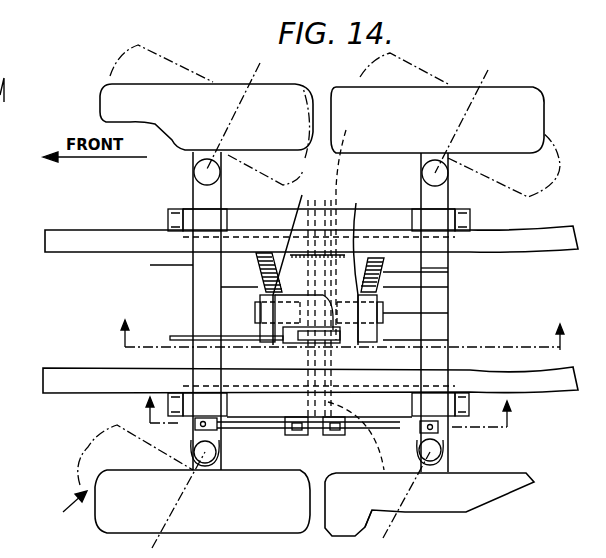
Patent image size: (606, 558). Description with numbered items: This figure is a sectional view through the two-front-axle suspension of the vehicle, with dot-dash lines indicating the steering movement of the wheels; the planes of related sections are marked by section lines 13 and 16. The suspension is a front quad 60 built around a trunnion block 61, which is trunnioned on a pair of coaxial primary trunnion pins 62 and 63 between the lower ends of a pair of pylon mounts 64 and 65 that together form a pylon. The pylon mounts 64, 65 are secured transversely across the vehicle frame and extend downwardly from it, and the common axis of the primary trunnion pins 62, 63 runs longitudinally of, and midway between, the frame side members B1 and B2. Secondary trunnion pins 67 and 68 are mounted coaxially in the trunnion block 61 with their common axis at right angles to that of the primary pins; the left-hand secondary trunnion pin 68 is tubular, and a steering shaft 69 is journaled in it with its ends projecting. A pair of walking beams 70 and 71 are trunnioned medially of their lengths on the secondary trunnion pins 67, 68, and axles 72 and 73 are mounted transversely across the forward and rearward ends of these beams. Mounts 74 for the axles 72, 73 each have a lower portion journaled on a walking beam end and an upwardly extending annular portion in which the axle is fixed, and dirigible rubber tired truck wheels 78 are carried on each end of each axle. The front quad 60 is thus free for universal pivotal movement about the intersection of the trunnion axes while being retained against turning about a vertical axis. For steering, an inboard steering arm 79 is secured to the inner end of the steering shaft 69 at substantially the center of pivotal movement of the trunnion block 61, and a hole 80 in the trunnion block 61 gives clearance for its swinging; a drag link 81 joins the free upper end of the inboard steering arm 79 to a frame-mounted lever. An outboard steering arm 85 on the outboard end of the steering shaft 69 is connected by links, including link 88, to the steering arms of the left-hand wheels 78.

The section line 13- 13 is at (330, 428).
The section line 16- 16 is at (345, 323).
The front quad 60 is at (65, 514).
The trunnion block 61 is at (438, 268).
The primary trunnion pin 62 is at (255, 308).
The primary trunnion pin 63 is at (380, 312).
The pylon mount 64 is at (290, 260).
The pylon mount 65 is at (367, 263).
The secondary trunnion pin 67 is at (356, 293).
The secondary trunnion pin 68 is at (392, 476).
The steering shaft 69 is at (308, 437).
The walking beam 70 is at (393, 210).
The walking beam 71 is at (247, 412).
The axle 72 is at (152, 265).
The axle 73 is at (440, 295).
The mount 74 is at (203, 214).
The truck wheel 78 is at (335, 100).
The inboard steering arm 79 is at (345, 338).
The hole 80 is at (258, 299).
The drag link 81 is at (205, 336).
The outboard steering arm 85 is at (318, 437).
The link 88 is at (402, 471).
The frame side member B1 is at (53, 371).
The frame side member B2 is at (87, 233).